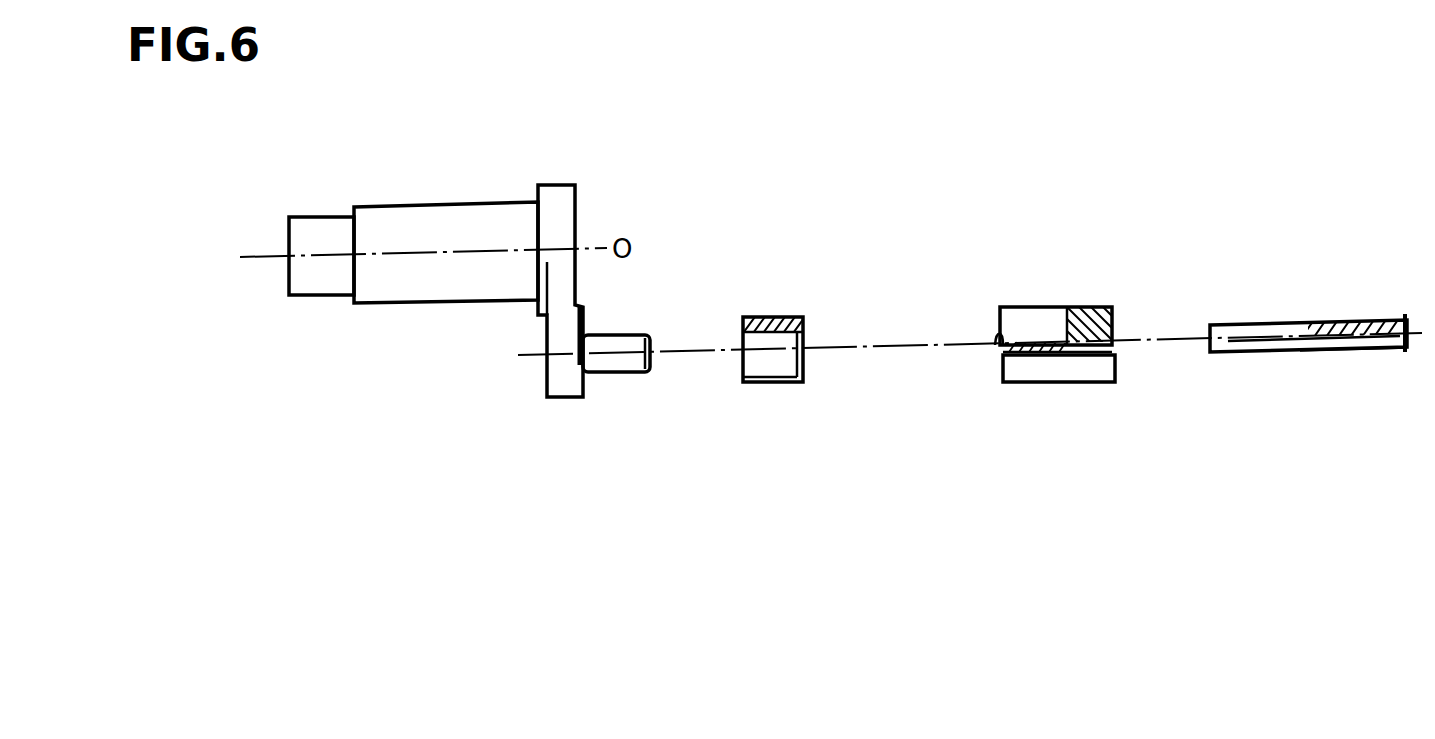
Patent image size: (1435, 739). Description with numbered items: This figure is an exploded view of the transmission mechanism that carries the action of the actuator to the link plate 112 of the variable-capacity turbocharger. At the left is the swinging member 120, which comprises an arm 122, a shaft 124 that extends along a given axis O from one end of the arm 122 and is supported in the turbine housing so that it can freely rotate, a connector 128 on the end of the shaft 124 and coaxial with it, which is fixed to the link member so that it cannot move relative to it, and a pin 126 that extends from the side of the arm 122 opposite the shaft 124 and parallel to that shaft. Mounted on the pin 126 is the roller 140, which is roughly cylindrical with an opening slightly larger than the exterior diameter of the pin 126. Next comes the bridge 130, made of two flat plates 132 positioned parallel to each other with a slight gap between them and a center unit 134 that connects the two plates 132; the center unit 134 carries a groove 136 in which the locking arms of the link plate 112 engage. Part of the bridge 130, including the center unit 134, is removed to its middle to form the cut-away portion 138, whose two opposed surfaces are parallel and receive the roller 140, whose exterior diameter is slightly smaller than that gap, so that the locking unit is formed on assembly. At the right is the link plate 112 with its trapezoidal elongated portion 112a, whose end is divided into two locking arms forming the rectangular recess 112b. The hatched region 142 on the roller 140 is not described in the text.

The link plate 112 is at (1312, 304).
The elongated portion 112a is at (1345, 349).
The rectangular recess 112b is at (1250, 333).
The swinging member 120 is at (468, 260).
The arm 122 is at (557, 197).
The shaft 124 is at (433, 285).
The pin 126 is at (612, 372).
The connector 128 is at (317, 228).
The bridge 130 is at (1040, 307).
The flat plates 132 is at (1030, 370).
The center unit 134 is at (1058, 352).
The groove 136 is at (995, 345).
The cut-away portion 138 is at (1057, 308).
The roller 140 is at (789, 287).
The ring hatched portion 142 is at (805, 334).